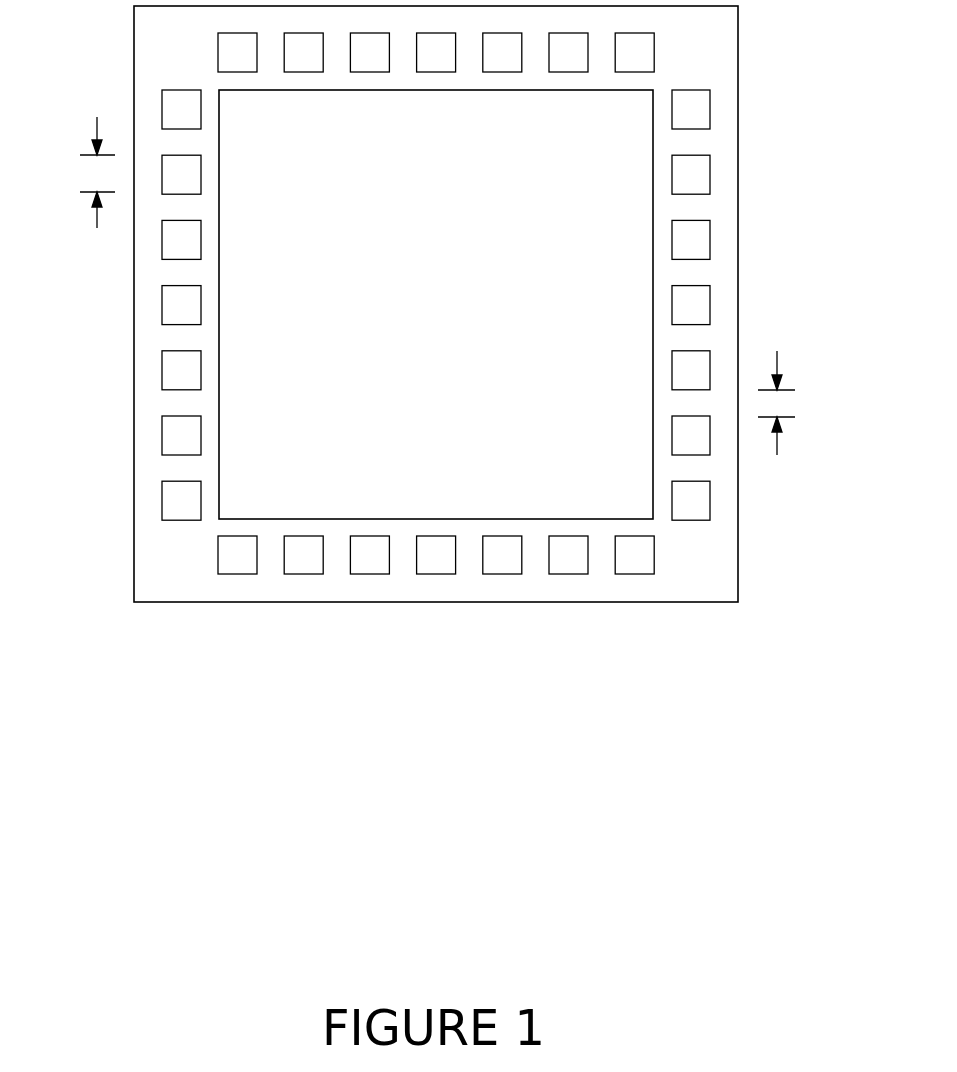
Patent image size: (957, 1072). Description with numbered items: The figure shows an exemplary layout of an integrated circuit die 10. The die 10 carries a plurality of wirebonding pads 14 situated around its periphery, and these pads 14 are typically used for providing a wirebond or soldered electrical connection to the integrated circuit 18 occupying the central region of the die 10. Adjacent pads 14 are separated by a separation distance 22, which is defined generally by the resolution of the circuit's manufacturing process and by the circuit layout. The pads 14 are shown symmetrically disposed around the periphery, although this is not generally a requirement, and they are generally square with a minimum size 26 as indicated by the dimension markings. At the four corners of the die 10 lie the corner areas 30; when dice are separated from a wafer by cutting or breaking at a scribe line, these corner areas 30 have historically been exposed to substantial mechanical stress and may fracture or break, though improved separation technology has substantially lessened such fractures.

The integrated circuit die 10 is at (678, 602).
The wirebonding pads 14 is at (710, 180).
The integrated circuit 18 is at (247, 499).
The separation distance 22 is at (777, 351).
The minimum size 26 is at (97, 117).
The corner areas 30 is at (172, 52).